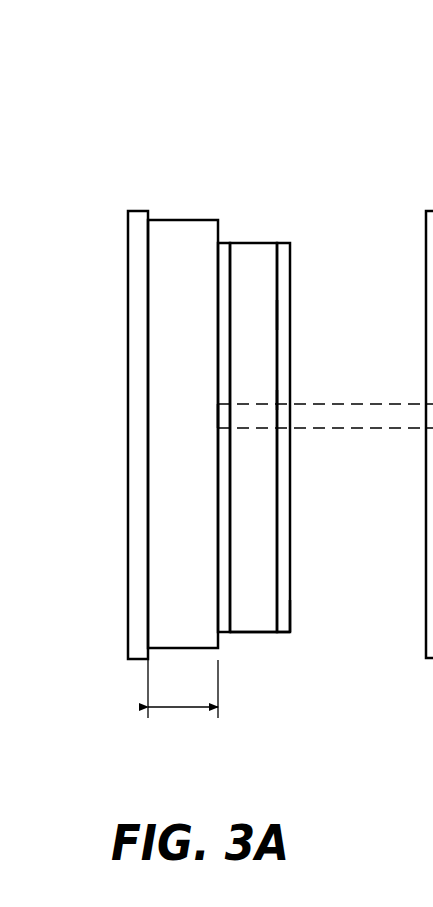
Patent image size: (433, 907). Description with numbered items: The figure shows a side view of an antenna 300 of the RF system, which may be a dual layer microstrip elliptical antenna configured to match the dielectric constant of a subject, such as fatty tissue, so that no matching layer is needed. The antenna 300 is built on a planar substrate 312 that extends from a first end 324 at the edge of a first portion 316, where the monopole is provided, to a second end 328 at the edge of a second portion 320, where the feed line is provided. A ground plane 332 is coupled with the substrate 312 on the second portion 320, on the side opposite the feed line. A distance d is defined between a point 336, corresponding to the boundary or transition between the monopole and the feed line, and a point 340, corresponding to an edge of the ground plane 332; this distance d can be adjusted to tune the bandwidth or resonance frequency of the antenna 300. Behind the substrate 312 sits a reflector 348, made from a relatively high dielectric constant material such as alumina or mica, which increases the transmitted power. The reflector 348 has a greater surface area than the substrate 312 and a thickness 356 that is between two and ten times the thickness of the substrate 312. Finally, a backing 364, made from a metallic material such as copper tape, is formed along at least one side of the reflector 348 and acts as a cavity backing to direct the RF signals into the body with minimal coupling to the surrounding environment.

The antenna 300 is at (248, 78).
The substrate 312 is at (253, 257).
The first portion 316 is at (253, 315).
The second portion 320 is at (258, 602).
The first end 324 is at (270, 242).
The second end 328 is at (252, 632).
The ground plane 332 is at (223, 625).
The point 336 is at (277, 403).
The point 340 is at (218, 428).
The reflector 348 is at (178, 358).
The thickness 356 is at (183, 689).
The backing 364 is at (137, 308).
The distance d is at (383, 370).